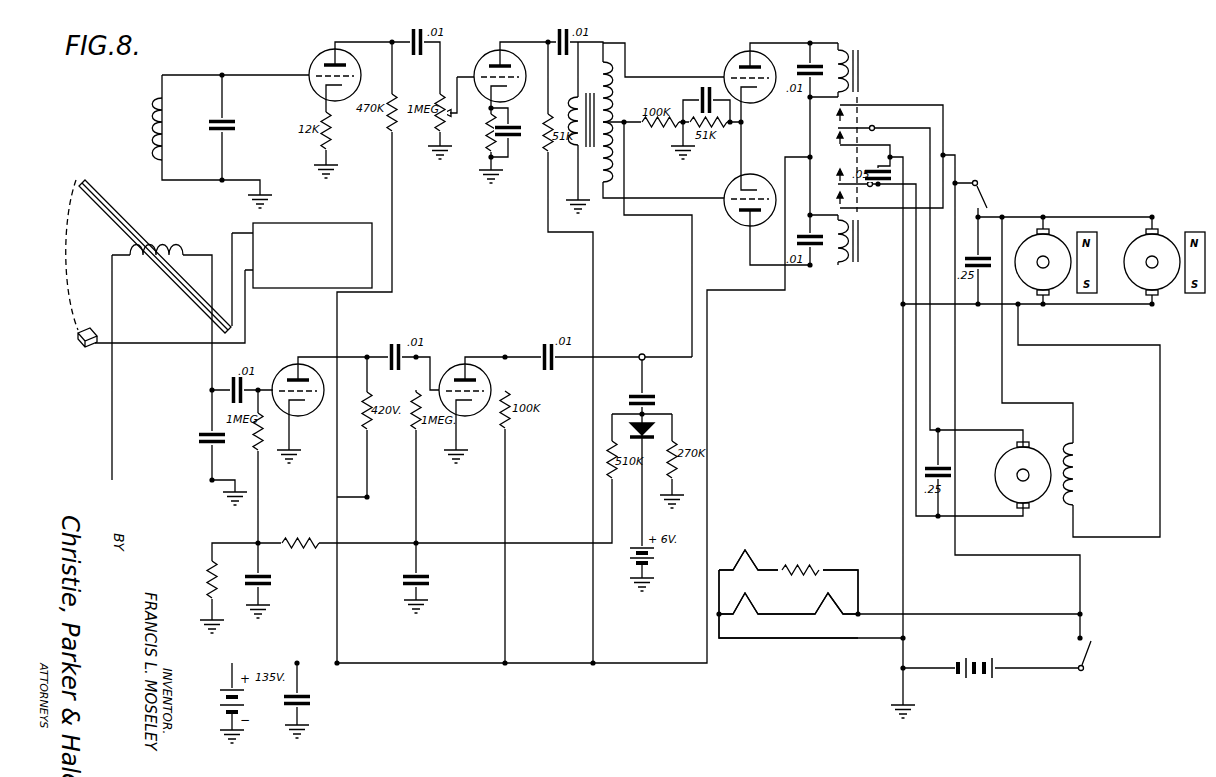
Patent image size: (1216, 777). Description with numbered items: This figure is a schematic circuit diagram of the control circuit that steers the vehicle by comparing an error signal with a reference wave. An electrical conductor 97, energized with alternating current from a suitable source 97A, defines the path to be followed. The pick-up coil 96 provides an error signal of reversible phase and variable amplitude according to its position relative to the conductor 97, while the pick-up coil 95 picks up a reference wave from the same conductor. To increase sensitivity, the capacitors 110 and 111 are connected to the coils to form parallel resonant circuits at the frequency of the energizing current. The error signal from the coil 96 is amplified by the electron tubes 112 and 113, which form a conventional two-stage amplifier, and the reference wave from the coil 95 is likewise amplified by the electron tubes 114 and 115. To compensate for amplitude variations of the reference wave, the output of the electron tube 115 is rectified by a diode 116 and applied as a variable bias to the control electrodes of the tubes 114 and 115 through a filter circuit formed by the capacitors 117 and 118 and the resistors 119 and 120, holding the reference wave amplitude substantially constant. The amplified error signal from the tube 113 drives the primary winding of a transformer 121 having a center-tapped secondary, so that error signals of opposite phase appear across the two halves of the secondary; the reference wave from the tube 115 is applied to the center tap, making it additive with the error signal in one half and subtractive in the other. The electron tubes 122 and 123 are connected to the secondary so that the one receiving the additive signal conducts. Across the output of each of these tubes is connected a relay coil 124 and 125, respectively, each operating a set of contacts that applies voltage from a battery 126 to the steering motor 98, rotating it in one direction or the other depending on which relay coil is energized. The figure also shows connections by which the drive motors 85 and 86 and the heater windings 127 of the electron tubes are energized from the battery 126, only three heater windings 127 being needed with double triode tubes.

The drive motor 85 is at (1066, 235).
The drive motor 86 is at (1157, 235).
The pick-up coil 95 is at (164, 252).
The pick-up coil 96 is at (157, 140).
The electrical conductor 97 is at (200, 304).
The source of alternating current 97A is at (322, 225).
The steering motor 98 is at (1030, 501).
The capacitor 110 is at (235, 125).
The capacitor 111 is at (198, 436).
The electron tube 112 is at (312, 58).
The electron tube 113 is at (475, 65).
The electron tube 114 is at (278, 372).
The electron tube 115 is at (448, 365).
The diode 116 is at (636, 427).
The capacitor 117 is at (250, 575).
The capacitor 118 is at (430, 577).
The resistor 119 is at (288, 540).
The resistor 120 is at (212, 560).
The transformer 121 is at (595, 35).
The electron tube 122 is at (760, 103).
The electron tube 123 is at (737, 222).
The relay coil 124 is at (845, 43).
The relay coil 125 is at (846, 267).
The battery 126 is at (965, 678).
The heater winding 127 is at (780, 606).